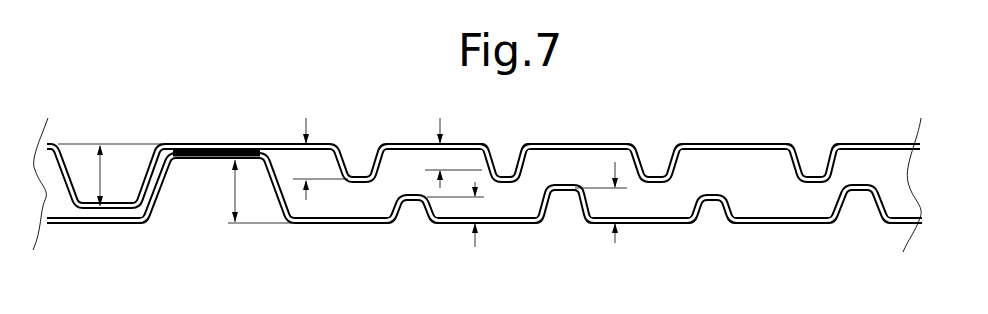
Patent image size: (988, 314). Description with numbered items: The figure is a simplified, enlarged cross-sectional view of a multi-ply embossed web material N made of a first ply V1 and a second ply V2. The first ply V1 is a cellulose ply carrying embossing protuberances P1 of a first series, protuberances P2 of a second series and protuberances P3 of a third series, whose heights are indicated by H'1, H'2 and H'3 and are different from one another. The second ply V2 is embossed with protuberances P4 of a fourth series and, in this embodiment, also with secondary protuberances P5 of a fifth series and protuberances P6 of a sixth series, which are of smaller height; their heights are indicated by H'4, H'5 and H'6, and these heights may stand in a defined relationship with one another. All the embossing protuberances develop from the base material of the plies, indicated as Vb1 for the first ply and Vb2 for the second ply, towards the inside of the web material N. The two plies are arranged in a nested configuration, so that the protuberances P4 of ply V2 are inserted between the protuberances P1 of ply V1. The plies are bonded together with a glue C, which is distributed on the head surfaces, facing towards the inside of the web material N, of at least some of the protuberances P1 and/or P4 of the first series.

The web material N is at (753, 130).
The second ply V2 is at (725, 136).
The first ply V1 is at (757, 232).
The base material of second ply Vb2 is at (391, 143).
The base material of first ply Vb1 is at (340, 225).
The embossing protuberances of first series P1 is at (160, 190).
The embossing protuberances of second series P2 is at (547, 210).
The embossing protuberances of third series P3 is at (398, 212).
The embossing protuberances of fourth series P4 is at (63, 151).
The embossing protuberances of fifth series P5 is at (363, 146).
The embossing protuberances of sixth series P6 is at (494, 146).
The glue C is at (222, 145).
The height of protuberances P1 H'1 is at (255, 191).
The height of protuberances P2 H'2 is at (605, 202).
The height of protuberances P3 H'3 is at (461, 214).
The height of protuberances P4 H'4 is at (115, 175).
The height of protuberances P5 H'5 is at (320, 159).
The height of protuberances P6 H'6 is at (453, 153).